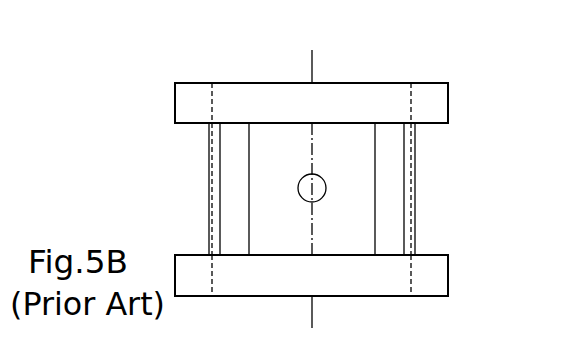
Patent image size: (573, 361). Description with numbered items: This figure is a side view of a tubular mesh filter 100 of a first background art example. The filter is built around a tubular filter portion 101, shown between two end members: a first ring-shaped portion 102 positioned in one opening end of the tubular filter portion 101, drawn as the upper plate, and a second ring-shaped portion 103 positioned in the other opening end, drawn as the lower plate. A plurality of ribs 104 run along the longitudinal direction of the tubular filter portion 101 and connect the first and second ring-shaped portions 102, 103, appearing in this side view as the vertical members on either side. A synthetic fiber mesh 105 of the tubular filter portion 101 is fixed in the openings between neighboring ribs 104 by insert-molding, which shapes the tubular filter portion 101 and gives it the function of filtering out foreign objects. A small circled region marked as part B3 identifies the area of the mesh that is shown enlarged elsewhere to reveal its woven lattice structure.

The tubular mesh filter 100 is at (449, 75).
The tubular filter portion 101 is at (358, 218).
The first ring-shaped portion 102 is at (187, 83).
The second ring-shaped portion 103 is at (188, 280).
The ribs 104 is at (232, 217).
The synthetic fiber mesh 105 is at (209, 155).
The part B3 is at (318, 175).